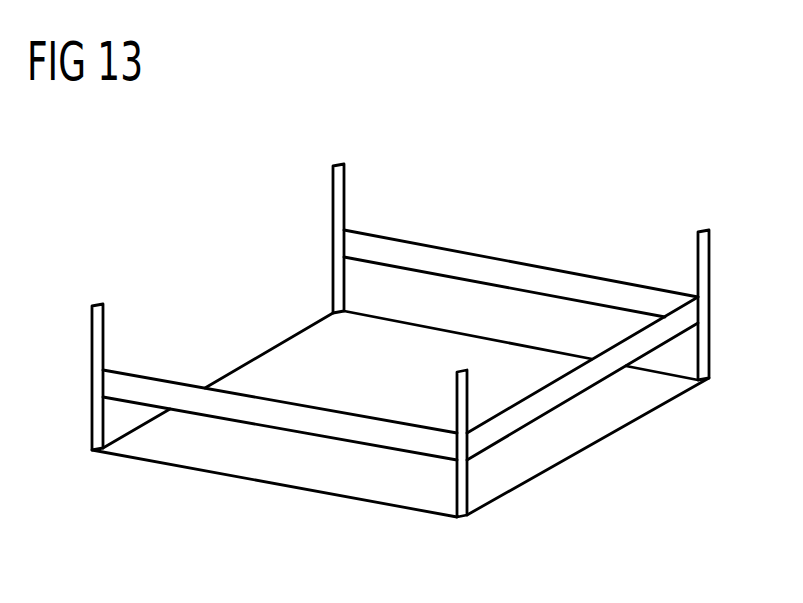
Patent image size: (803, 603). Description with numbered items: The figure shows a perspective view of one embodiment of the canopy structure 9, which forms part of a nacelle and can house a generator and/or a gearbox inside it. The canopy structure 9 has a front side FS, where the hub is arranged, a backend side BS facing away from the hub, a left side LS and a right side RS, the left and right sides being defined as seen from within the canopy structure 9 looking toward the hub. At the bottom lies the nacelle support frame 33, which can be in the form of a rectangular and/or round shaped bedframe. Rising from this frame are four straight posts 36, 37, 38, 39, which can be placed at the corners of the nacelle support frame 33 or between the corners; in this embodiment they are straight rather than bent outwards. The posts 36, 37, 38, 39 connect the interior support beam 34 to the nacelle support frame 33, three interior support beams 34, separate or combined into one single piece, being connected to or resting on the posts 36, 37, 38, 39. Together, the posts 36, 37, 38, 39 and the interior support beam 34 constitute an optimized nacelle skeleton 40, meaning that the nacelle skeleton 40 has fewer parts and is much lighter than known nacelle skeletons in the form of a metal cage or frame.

The canopy structure 9 is at (485, 106).
The nacelle support frame 33 is at (307, 492).
The interior support beam 34 is at (468, 268).
The post 36 is at (92, 348).
The post 37 is at (333, 205).
The post 38 is at (698, 258).
The post 39 is at (457, 398).
The nacelle skeleton 40 is at (586, 259).
The right side RS is at (542, 171).
The front side FS is at (164, 282).
The backend side BS is at (660, 465).
The left side LS is at (217, 527).